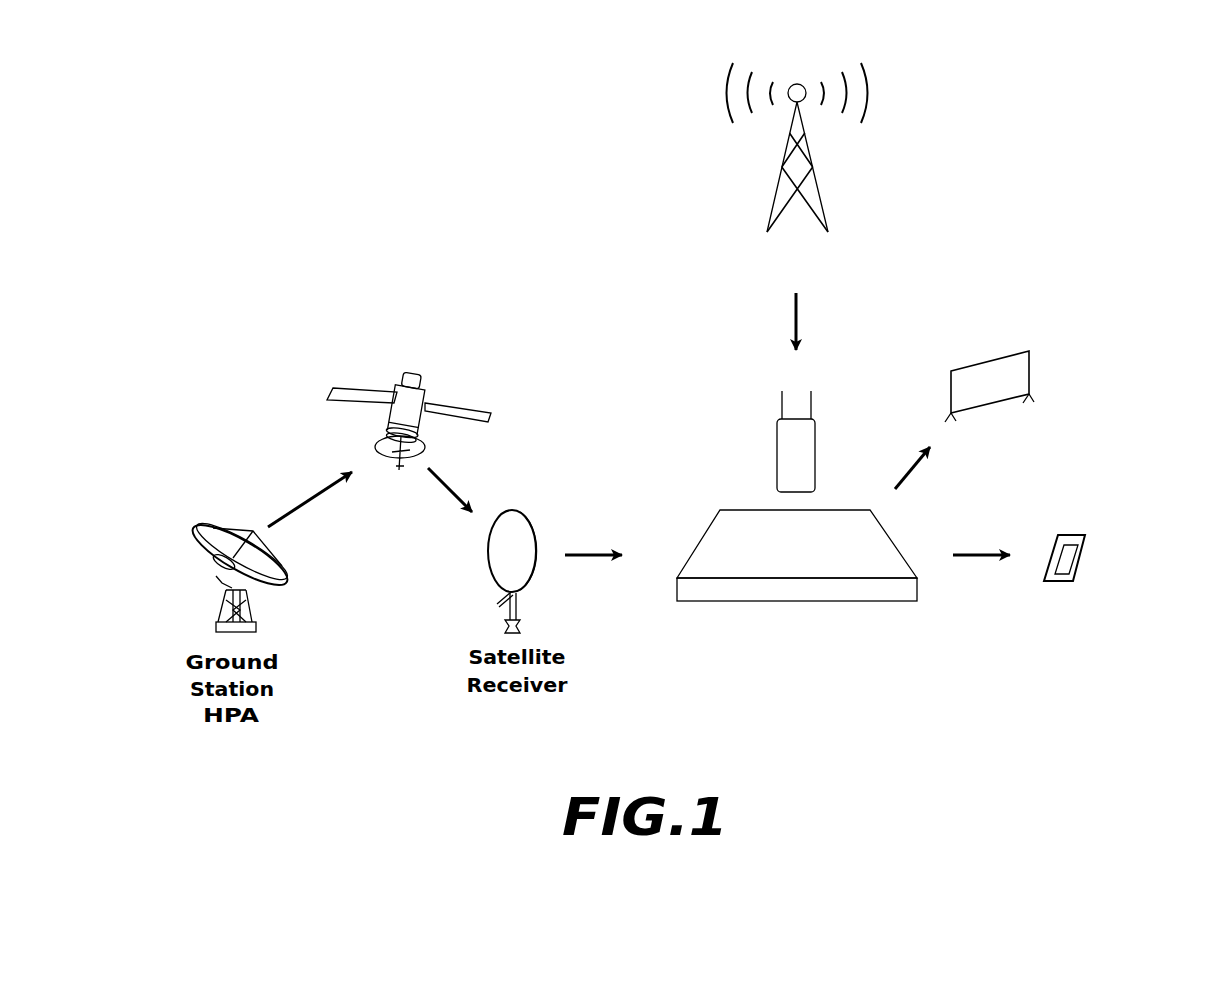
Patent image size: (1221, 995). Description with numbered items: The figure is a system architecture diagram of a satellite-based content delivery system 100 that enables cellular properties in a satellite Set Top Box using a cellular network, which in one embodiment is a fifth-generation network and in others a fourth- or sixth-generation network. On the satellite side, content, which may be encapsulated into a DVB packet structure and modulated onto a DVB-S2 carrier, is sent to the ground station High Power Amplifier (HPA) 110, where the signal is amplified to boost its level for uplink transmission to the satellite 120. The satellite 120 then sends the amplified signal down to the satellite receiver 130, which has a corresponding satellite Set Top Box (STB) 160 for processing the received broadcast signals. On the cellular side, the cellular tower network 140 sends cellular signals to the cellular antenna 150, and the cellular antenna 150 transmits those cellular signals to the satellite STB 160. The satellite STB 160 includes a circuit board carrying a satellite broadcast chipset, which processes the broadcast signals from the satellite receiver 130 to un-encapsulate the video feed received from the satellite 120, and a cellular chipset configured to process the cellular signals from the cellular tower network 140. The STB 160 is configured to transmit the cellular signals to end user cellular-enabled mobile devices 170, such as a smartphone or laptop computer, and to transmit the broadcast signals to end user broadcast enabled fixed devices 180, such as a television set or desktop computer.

The satellite-based content delivery system 100 is at (546, 246).
The ground station High Power Amplifier (HPA) 110 is at (240, 530).
The satellite 120 is at (417, 388).
The satellite receiver 130 is at (515, 525).
The cellular tower network 140 is at (857, 200).
The cellular antenna 150 is at (808, 437).
The satellite Set Top Box (STB) 160 is at (800, 595).
The cellular-enabled mobile device 170 is at (1083, 558).
The broadcast enabled fixed device 180 is at (985, 372).